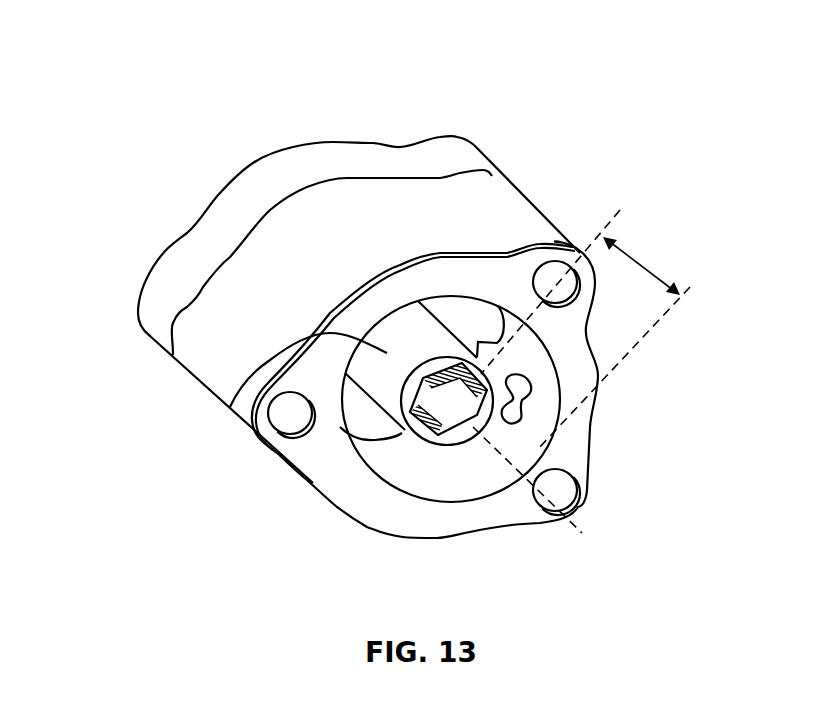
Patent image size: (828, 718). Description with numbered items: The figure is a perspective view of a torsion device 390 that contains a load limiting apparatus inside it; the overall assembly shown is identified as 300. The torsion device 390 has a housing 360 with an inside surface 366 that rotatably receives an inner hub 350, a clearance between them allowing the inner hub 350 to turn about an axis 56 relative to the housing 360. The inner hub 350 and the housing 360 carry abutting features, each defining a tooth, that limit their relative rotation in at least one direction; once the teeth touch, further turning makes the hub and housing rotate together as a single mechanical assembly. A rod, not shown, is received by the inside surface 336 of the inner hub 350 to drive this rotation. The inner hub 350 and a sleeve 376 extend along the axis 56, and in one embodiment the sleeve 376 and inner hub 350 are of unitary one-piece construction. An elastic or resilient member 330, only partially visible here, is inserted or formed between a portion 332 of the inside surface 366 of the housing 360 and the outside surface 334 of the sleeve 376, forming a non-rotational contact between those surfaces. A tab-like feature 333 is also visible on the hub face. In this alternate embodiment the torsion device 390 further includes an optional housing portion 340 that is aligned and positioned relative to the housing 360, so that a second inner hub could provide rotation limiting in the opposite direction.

The hydraulic pump assembly 300 is at (513, 70).
The housing portion 340 is at (148, 333).
The housing 360 is at (508, 178).
The torsion device 390 is at (520, 193).
The elastic or resilient member 330 is at (585, 448).
The inside surface 366 is at (468, 477).
The inner hub 350 is at (473, 310).
The port opening 333 is at (520, 335).
The sleeve 376 is at (380, 403).
The outside surface 334 is at (230, 410).
The inside surface 336 is at (428, 412).
The axis 56 is at (575, 528).
The portion 332 is at (640, 263).